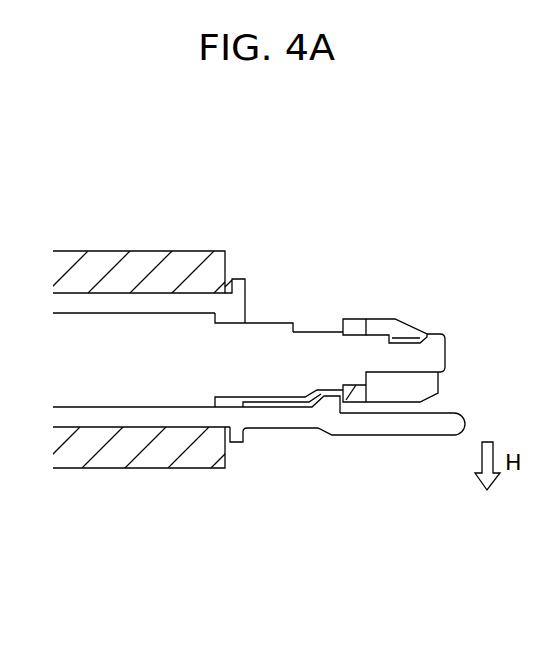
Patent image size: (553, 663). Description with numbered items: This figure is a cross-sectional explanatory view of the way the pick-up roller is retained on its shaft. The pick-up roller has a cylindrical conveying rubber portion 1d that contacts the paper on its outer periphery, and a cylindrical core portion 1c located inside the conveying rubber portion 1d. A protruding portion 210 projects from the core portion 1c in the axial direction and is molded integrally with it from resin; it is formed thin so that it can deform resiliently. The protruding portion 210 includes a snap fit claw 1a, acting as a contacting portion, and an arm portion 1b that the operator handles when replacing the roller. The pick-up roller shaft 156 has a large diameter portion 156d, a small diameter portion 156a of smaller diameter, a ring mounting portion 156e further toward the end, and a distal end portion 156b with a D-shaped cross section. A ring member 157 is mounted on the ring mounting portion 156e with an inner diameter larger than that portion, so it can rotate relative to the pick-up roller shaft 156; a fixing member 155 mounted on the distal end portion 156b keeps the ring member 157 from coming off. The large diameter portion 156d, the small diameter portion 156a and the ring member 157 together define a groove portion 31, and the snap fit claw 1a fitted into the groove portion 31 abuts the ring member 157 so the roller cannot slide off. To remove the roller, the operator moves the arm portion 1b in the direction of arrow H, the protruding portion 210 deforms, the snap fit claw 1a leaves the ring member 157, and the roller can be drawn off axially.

The pick-up roller shaft 156 is at (116, 338).
The large diameter portion 156d is at (257, 332).
The small diameter portion 156a is at (307, 332).
The groove portion 31 is at (323, 320).
The ring member 157 is at (356, 325).
The ring mounting portion 156e is at (362, 357).
The fixing member 155 is at (397, 318).
The distal end portion 156b is at (433, 353).
The core portion 1c is at (188, 417).
The snap fit claw 1a is at (320, 415).
The arm portion 1b is at (445, 430).
The conveying rubber portion 1d is at (123, 448).
The protruding portion 210 is at (347, 442).